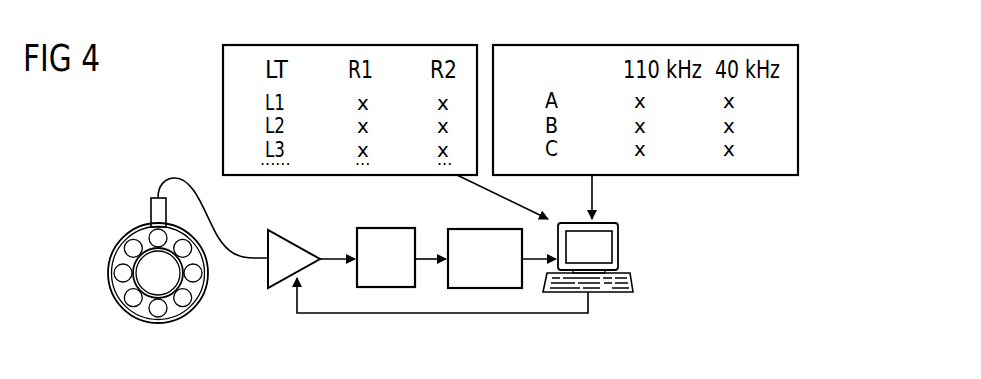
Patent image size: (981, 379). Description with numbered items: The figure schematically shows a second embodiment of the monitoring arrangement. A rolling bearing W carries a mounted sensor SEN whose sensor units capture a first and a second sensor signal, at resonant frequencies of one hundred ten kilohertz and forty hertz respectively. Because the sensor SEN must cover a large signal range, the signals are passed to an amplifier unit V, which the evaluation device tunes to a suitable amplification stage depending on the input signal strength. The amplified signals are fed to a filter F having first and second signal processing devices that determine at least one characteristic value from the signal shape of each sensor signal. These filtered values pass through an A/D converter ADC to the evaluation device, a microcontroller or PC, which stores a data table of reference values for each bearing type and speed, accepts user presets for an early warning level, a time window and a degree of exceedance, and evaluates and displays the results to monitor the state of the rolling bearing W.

The sensor SEN is at (151, 208).
The rolling bearing W is at (110, 283).
The amplifier unit V is at (283, 290).
The filter F is at (386, 288).
The A/D converter ADC is at (483, 289).